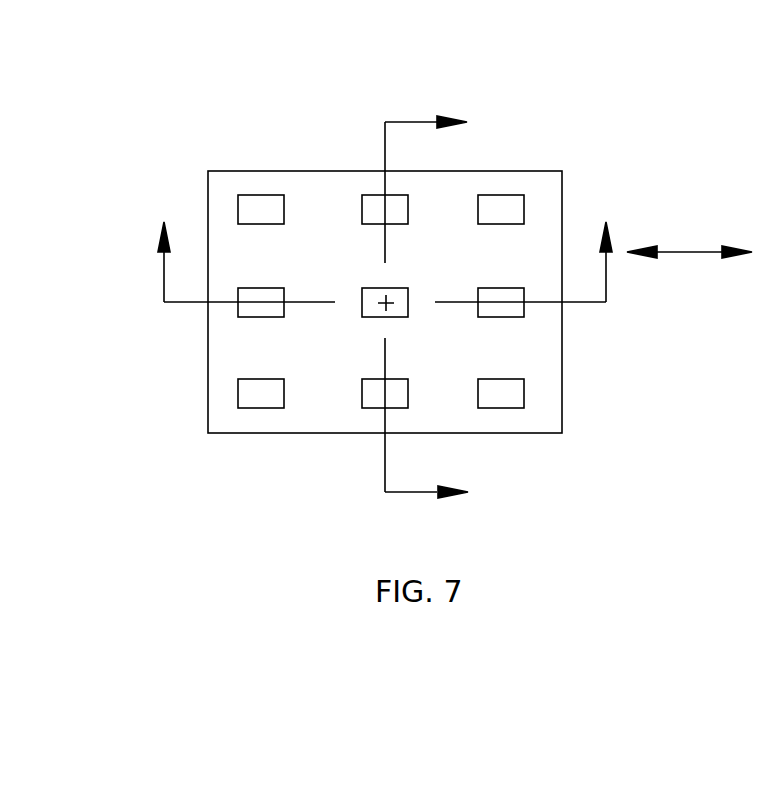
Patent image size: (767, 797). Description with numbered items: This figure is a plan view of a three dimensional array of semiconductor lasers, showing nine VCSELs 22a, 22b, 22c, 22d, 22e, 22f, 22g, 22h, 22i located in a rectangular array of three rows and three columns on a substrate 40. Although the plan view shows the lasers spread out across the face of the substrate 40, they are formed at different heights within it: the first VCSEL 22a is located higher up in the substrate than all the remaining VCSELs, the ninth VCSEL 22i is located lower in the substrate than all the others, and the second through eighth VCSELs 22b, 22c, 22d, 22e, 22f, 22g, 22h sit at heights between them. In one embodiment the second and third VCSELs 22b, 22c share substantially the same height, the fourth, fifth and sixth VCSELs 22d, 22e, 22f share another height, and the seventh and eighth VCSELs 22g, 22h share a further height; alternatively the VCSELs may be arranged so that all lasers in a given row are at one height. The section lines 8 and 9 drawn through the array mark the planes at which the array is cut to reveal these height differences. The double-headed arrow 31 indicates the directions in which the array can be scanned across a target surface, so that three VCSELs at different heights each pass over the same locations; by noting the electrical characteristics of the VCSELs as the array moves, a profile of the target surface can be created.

The substrate 40 is at (235, 360).
The first VCSEL 22a is at (267, 397).
The second VCSEL 22b is at (250, 312).
The third VCSEL 22c is at (377, 395).
The fourth VCSEL 22d is at (258, 207).
The fifth VCSEL 22e is at (376, 293).
The sixth VCSEL 22f is at (512, 395).
The seventh VCSEL 22g is at (374, 208).
The eighth VCSEL 22h is at (510, 318).
The ninth VCSEL 22i is at (503, 207).
The arrows 31 is at (688, 252).
The section line 8- 8 is at (384, 240).
The section line 9- 9 is at (442, 304).